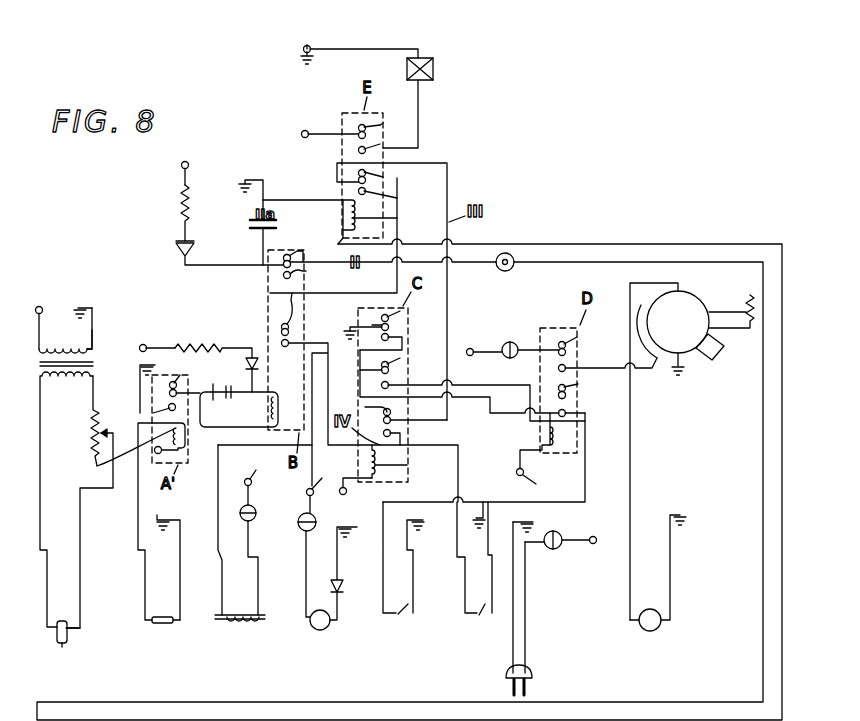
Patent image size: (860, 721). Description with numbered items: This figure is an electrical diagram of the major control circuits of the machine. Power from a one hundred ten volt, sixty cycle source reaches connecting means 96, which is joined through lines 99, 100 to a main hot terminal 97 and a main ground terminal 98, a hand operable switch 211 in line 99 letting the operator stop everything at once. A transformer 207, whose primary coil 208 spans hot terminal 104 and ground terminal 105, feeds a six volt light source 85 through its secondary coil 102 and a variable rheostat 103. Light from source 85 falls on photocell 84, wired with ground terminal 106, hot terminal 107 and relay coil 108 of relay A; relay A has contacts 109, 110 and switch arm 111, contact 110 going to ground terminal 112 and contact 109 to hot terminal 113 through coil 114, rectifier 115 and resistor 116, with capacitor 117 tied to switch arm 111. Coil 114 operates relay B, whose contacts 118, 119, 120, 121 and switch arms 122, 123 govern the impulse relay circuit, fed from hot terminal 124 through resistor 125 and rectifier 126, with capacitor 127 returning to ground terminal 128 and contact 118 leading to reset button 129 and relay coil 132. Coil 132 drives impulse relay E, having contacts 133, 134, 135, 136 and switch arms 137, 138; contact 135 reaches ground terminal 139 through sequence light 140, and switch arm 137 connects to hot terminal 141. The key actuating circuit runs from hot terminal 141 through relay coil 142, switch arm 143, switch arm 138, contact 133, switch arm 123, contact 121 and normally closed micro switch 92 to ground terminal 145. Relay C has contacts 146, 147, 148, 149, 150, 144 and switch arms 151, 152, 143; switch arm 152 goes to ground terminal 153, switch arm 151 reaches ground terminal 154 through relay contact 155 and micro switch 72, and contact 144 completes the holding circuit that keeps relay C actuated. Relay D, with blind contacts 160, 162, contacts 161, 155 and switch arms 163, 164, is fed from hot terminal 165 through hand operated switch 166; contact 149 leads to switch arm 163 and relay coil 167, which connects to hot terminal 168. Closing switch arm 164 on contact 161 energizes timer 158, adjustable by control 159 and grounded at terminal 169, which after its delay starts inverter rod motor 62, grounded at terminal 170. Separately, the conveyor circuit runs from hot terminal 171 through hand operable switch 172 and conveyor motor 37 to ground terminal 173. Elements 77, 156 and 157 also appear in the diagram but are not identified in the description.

The conveyor motor 37 is at (326, 631).
The inverter rod motor 62 is at (650, 632).
The micro switch 72 is at (399, 619).
The solenoid coil 77 is at (244, 627).
The photocell 84 is at (160, 625).
The light source 85 is at (55, 633).
The micro switch 92 is at (481, 608).
The connecting means 96 is at (532, 681).
The main hot terminal 97 is at (596, 545).
The main ground terminal 98 is at (535, 521).
The line 99 is at (527, 640).
The line 100 is at (511, 646).
The secondary coil 102 is at (40, 378).
The variable rheostat 103 is at (92, 440).
The hot terminal 104 is at (40, 306).
The ground terminal 105 is at (75, 308).
The ground terminal 106 is at (167, 559).
The hot terminal 107 is at (150, 458).
The relay coil 108 is at (151, 453).
The contact 109 is at (184, 375).
The contact 110 is at (153, 413).
The switch arm 111 is at (188, 404).
The ground terminal 112 is at (139, 369).
The hot terminal 113 is at (143, 344).
The coil 114 is at (270, 411).
The rectifier 115 is at (260, 365).
The resistor 116 is at (197, 346).
The capacitor 117 is at (221, 384).
The contact 118 is at (298, 251).
The blind contact 119 is at (311, 278).
The contact 120 is at (287, 312).
The contact 121 is at (319, 342).
The switch arm 122 is at (283, 267).
The switch arm 123 is at (280, 330).
The hot terminal 124 is at (188, 161).
The resistor 125 is at (180, 206).
The rectifier 126 is at (175, 246).
The capacitor 127 is at (284, 208).
The ground terminal 128 is at (243, 183).
The reset button 129 is at (513, 270).
The relay coil 132 is at (397, 218).
The contact 133 is at (398, 198).
The blind contact 134 is at (384, 177).
The contact 135 is at (384, 145).
The blind contact 136 is at (384, 123).
The switch arm 137 is at (350, 131).
The switch arm 138 is at (338, 181).
The ground terminal 139 is at (309, 45).
The sequence light 140 is at (433, 70).
The hot terminal 141 is at (302, 131).
The relay coil 142 is at (407, 465).
The switch arm 143 is at (427, 424).
The contact 144 is at (405, 433).
The ground terminal 145 is at (483, 508).
The contact 146 is at (402, 313).
The contact 147 is at (402, 334).
The contact 148 is at (402, 358).
The contact 149 is at (402, 383).
The blind contact 150 is at (360, 398).
The switch arm 151 is at (359, 372).
The switch arm 152 is at (372, 325).
The ground terminal 153 is at (350, 324).
The ground terminal 154 is at (429, 521).
The relay contact 155 is at (585, 421).
The switch 156 is at (247, 530).
The indicator lamp 157 is at (257, 514).
The timer 158 is at (696, 302).
The control 159 is at (755, 312).
The blind contact 160 is at (578, 336).
The contact 161 is at (594, 366).
The blind contact 162 is at (580, 390).
The switch arm 163 is at (579, 384).
The switch arm 164 is at (543, 327).
The hot terminal 165 is at (471, 348).
The hand operated switch 166 is at (504, 357).
The relay coil 167 is at (556, 438).
The hot terminal 168 is at (543, 470).
The ground terminal 169 is at (687, 376).
The ground terminal 170 is at (688, 533).
The hot terminal 171 is at (326, 480).
The hand operable switch 172 is at (301, 530).
The ground terminal 173 is at (357, 527).
The transformer 207 is at (38, 363).
The primary coil 208 is at (87, 348).
The hand operable switch 211 is at (552, 549).